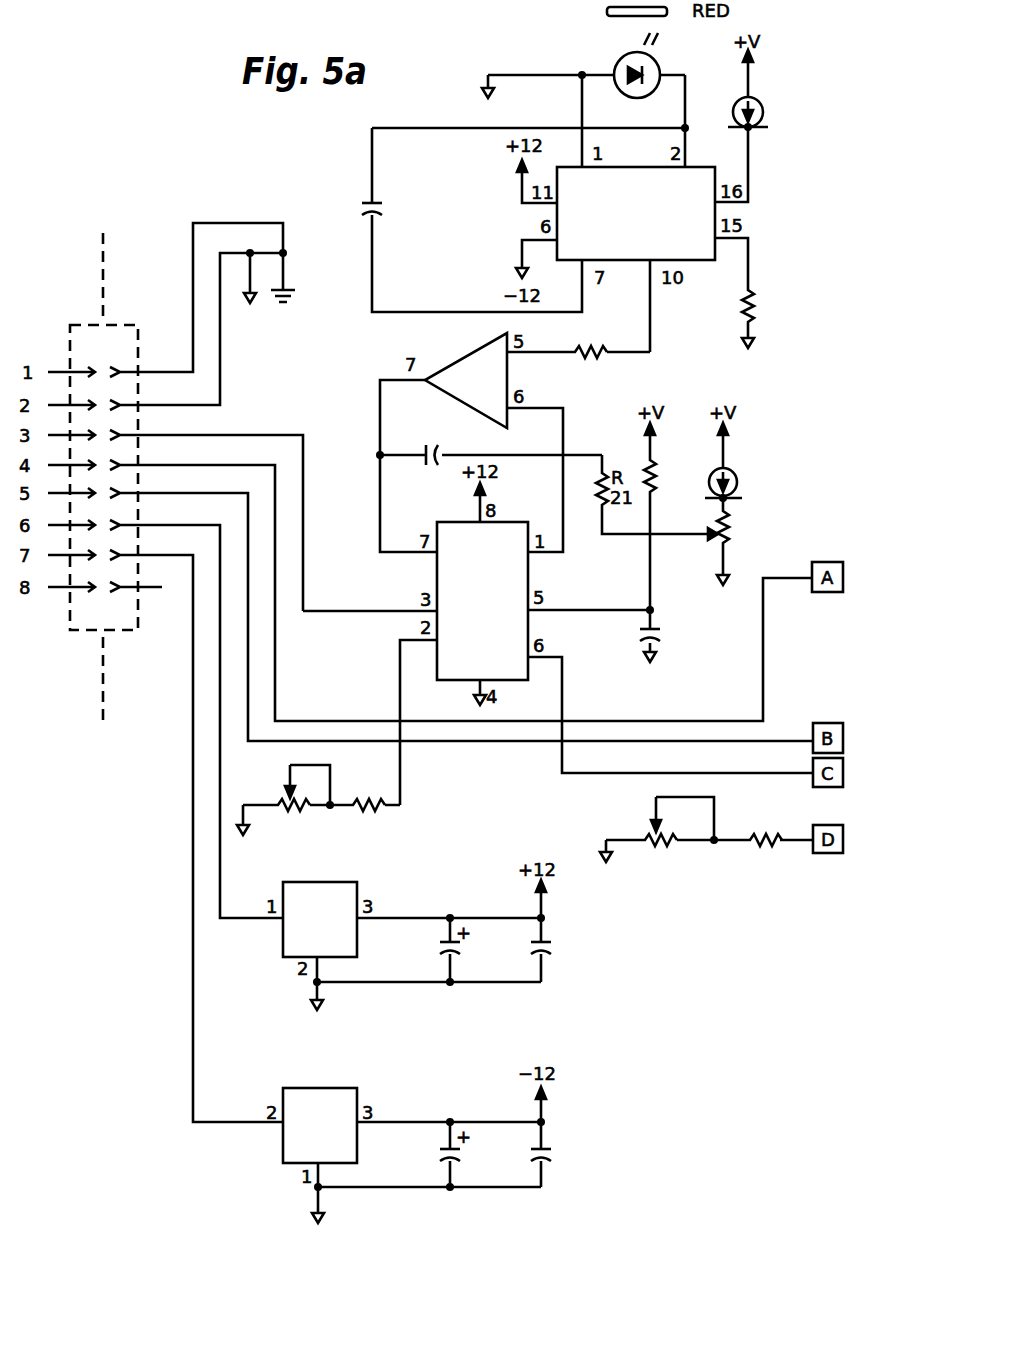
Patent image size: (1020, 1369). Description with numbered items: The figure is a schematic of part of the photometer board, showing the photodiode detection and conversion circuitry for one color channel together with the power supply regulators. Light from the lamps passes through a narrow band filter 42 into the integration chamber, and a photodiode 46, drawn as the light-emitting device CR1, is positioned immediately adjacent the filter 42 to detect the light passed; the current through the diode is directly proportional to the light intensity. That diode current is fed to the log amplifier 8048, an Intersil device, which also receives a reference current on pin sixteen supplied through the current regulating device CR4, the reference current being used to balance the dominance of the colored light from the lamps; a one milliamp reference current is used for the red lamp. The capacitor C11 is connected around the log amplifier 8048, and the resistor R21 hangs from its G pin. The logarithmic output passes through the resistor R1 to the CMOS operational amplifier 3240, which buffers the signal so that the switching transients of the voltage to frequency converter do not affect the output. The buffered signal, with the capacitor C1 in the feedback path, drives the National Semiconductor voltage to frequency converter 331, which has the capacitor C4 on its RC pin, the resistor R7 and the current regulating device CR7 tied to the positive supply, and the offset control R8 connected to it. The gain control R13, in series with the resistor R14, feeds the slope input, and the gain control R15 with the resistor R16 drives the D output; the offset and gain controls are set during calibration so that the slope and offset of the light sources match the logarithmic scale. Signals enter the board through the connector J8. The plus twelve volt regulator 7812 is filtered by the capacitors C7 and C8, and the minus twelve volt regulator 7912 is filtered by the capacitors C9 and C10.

The narrow band filter 42 is at (617, 19).
The photodiode 46 is at (595, 77).
The log amplifier 8048 is at (636, 213).
The CMOS operational amplifier 3240 is at (466, 380).
The voltage to frequency converter 331 is at (482, 601).
The plus twelve volt power supply regulator 7812 is at (320, 919).
The minus twelve volt power supply regulator 7912 is at (320, 1125).
The light emitting diode CR1 is at (680, 44).
The current regulator diode CR4 is at (761, 126).
The current regulator diode CR7 is at (742, 462).
The capacitor C1 is at (491, 443).
The capacitor C4 (poly) C4 is at (674, 639).
The capacitor C7 is at (462, 950).
The capacitor C8 is at (552, 937).
The capacitor C9 is at (462, 1154).
The capacitor C10 is at (558, 1143).
The capacitor C11 is at (455, 220).
The resistor R1 is at (578, 342).
The resistor R7 is at (664, 516).
The offset control R8 is at (738, 541).
The gain control R13 is at (285, 800).
The resistor R14 is at (365, 793).
The gain control R15 is at (659, 831).
The resistor R16 is at (763, 826).
The resistor R21 is at (756, 293).
The connector J8 is at (105, 478).